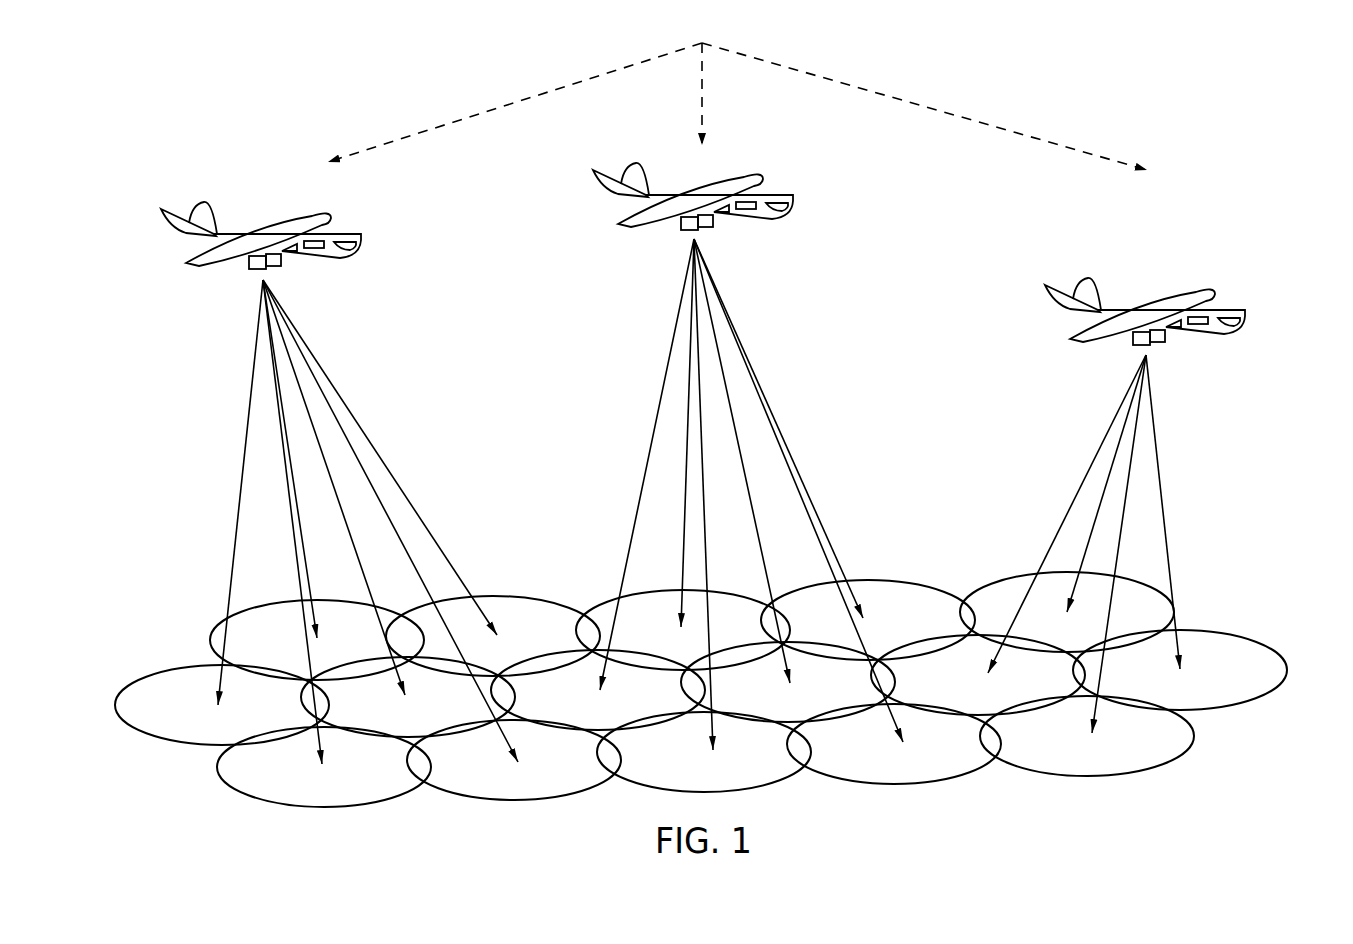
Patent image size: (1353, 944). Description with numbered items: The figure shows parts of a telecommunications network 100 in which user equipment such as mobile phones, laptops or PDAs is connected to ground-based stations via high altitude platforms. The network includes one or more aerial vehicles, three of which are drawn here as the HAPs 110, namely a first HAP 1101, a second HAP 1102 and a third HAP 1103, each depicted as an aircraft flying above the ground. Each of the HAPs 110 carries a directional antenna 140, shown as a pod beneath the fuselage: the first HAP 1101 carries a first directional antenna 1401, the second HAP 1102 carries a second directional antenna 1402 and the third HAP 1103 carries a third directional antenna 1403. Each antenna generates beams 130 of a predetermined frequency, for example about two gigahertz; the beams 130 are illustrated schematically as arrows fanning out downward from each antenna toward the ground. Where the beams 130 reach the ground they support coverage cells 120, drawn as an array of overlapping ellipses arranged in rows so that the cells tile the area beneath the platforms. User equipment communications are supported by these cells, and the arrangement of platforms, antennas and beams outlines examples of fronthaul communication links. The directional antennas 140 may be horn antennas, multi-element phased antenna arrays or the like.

The telecommunications network 100 is at (1236, 157).
The high altitude platforms (HAPs) 110 is at (703, 244).
The first HAP 1101 is at (231, 177).
The second HAP 1102 is at (613, 191).
The third HAP 1103 is at (1084, 285).
The coverage cells 120 is at (510, 613).
The beams 130 is at (235, 533).
The directional antennas 140 is at (671, 310).
The first directional antenna 1401 is at (250, 269).
The second directional antenna 1402 is at (718, 229).
The third directional antenna 1403 is at (1120, 347).